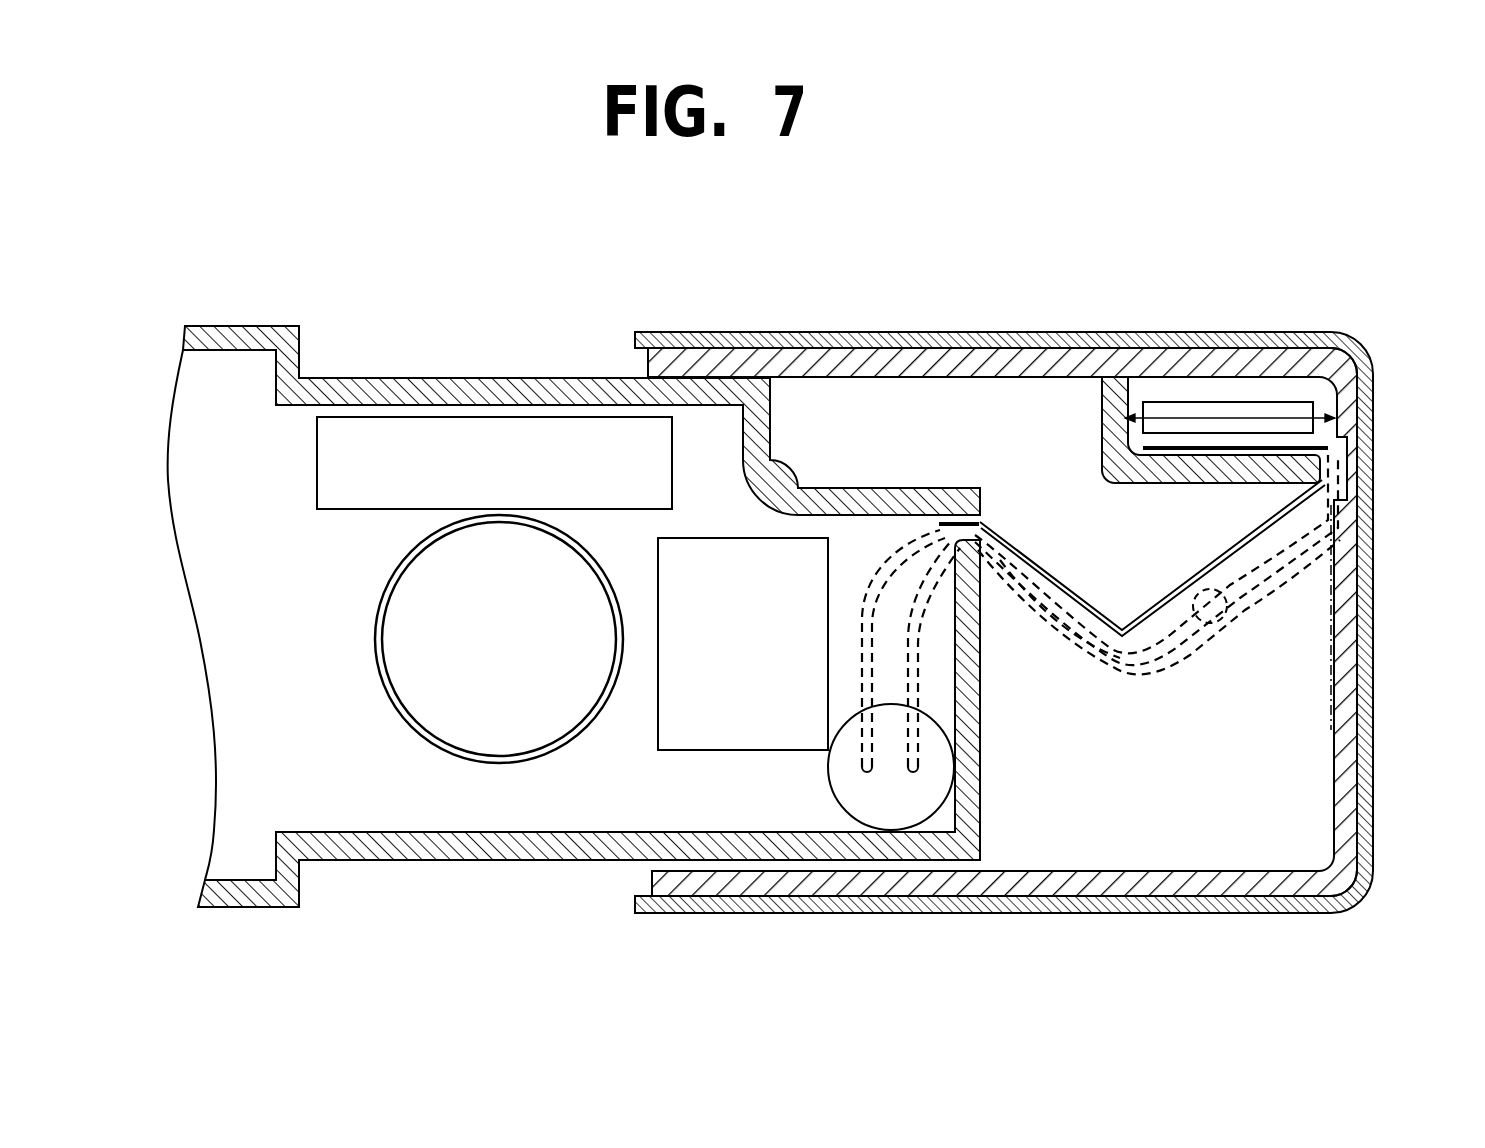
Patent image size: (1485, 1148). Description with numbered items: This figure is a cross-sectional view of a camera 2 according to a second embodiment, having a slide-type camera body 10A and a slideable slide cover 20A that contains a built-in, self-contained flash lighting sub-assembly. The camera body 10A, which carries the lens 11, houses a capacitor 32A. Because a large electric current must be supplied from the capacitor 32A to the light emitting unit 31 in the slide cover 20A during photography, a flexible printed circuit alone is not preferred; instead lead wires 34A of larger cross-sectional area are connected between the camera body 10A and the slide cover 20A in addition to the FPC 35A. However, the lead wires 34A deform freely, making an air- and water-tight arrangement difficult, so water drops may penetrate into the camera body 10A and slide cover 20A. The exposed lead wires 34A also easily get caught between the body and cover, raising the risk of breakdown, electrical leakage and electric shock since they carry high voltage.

The camera 2 is at (983, 162).
The camera body 10A is at (449, 378).
The lens 11 is at (494, 763).
The slide cover 20A is at (1028, 334).
The light emitting unit 31 is at (1240, 418).
The capacitor 32A is at (940, 758).
The lead wires 34A is at (1228, 622).
The FPC 35A is at (1160, 598).